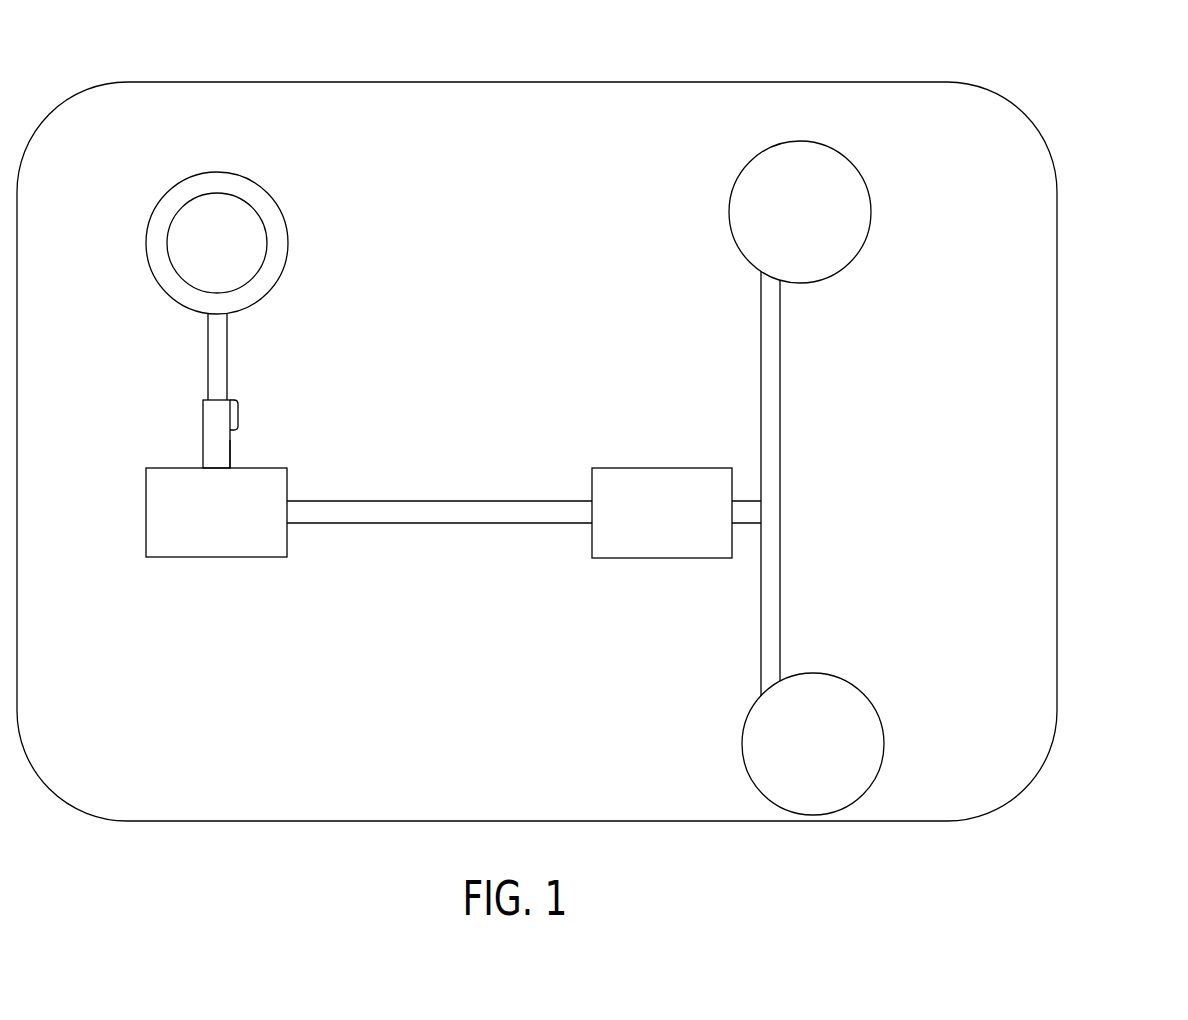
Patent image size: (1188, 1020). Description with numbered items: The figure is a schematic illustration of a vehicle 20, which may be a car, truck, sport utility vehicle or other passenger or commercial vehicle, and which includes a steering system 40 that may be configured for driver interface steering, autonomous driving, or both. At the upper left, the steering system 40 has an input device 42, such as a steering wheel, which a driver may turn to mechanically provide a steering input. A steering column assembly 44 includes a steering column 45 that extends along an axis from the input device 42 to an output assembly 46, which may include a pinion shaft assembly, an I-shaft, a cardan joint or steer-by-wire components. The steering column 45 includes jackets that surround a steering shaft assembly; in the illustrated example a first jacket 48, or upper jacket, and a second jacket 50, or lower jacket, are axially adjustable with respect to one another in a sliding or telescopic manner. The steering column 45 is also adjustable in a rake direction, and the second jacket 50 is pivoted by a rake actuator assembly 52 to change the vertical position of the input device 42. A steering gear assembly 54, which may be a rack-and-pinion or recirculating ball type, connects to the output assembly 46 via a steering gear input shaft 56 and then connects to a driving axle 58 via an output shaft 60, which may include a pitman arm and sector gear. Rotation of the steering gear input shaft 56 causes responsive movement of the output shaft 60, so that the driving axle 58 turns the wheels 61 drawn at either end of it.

The vehicle 20 is at (1090, 118).
The steering system 40 is at (849, 478).
The input device 42 is at (153, 213).
The steering column assembly 44 is at (205, 320).
The steering column 45 is at (205, 412).
The output assembly 46 is at (205, 525).
The first jacket 48 is at (228, 352).
The second jacket 50 is at (230, 455).
The rake actuator assembly 52 is at (238, 410).
The steering gear assembly 54 is at (651, 525).
The steering gear input shaft 56 is at (447, 509).
The driving axle 58 is at (772, 596).
The output shaft 60 is at (754, 505).
The wheels 61 is at (851, 262).